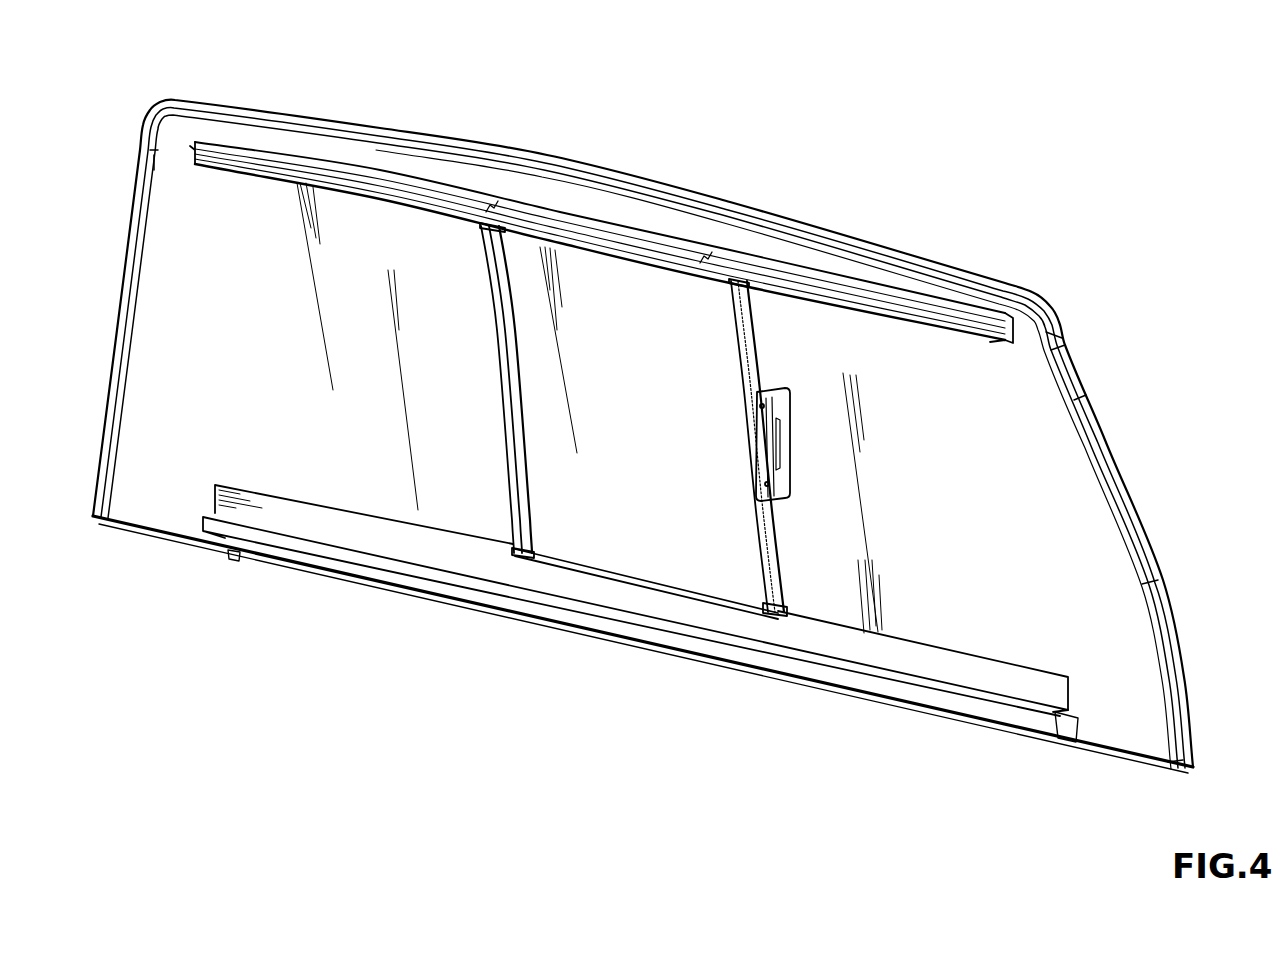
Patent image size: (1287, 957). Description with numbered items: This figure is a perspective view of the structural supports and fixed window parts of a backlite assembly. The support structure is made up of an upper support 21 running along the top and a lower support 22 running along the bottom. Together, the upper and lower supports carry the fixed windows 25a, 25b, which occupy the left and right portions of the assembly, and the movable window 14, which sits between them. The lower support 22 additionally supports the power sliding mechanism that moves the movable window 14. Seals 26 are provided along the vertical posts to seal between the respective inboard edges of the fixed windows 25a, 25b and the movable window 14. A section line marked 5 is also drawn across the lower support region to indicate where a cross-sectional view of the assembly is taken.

The upper support 21 is at (610, 203).
The movable window 14 is at (573, 523).
The seals 26 is at (755, 545).
The fixed window 25a is at (340, 480).
The lower support 22 is at (423, 547).
The fixed window 25b is at (983, 612).
The section line 5 is at (568, 662).